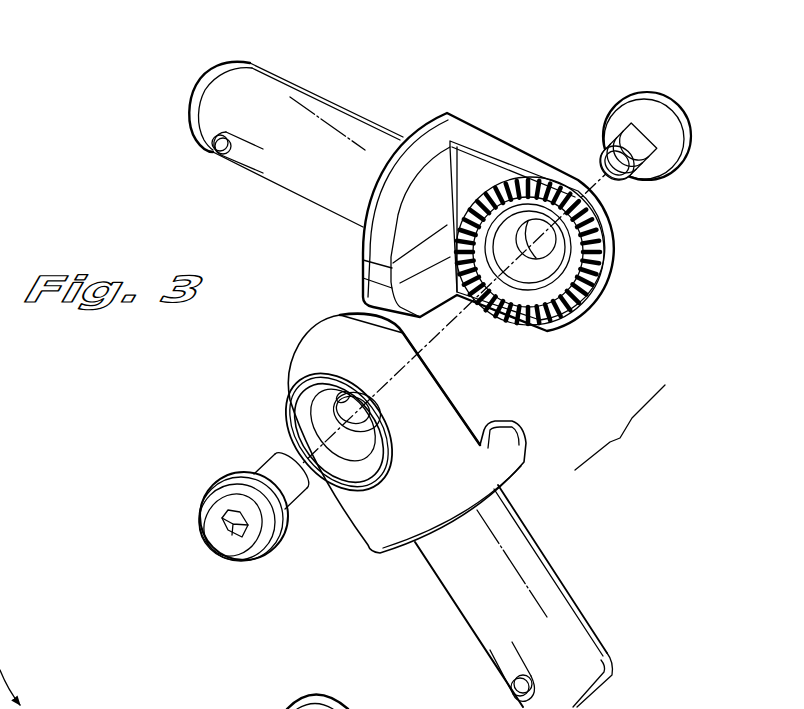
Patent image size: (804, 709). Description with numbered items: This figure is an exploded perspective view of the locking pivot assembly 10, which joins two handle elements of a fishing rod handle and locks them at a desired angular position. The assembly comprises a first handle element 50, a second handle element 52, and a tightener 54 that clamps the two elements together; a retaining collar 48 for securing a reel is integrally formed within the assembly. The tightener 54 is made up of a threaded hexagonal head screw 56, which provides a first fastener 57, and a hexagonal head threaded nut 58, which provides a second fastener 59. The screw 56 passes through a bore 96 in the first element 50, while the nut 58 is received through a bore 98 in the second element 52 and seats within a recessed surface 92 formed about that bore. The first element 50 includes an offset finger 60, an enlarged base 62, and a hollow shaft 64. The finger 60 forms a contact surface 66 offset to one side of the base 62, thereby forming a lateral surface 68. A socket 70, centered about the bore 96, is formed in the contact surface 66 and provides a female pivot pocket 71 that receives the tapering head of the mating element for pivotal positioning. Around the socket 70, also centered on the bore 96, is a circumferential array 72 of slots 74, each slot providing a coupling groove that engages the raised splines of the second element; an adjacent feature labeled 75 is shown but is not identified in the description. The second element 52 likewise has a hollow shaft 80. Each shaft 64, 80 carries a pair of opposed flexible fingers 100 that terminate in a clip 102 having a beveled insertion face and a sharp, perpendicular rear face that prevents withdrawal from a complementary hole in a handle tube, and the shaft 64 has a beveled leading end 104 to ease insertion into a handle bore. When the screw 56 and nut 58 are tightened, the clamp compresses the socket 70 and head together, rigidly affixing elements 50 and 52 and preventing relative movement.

The locking pivot assembly 10 is at (598, 55).
The retaining collar 48 is at (426, 329).
The first handle element 50 is at (436, 181).
The second handle element 52 is at (379, 475).
The tightener 54 is at (425, 323).
The threaded hexagonal head screw 56 is at (690, 160).
The first fastener 57 is at (690, 125).
The hexagonal head threaded nut 58 is at (262, 567).
The second fastener 59 is at (213, 536).
The offset finger 60 is at (542, 158).
The enlarged base 62 is at (373, 245).
The hollow shaft 64 is at (270, 135).
The contact surface 66 is at (487, 297).
The lateral surface 68 is at (433, 193).
The socket 70 is at (576, 285).
The female pivot pocket 71 is at (493, 243).
The circumferential array 72 is at (602, 295).
The slots 74 is at (540, 318).
The central bore 75 is at (560, 328).
The hollow shaft 80 is at (563, 617).
The recessed surface 92 is at (322, 405).
The bore 96 is at (560, 326).
The bore 98 is at (338, 395).
The flexible fingers 100 is at (247, 173).
The clip 102 is at (215, 157).
The beveled leading end 104 is at (202, 106).